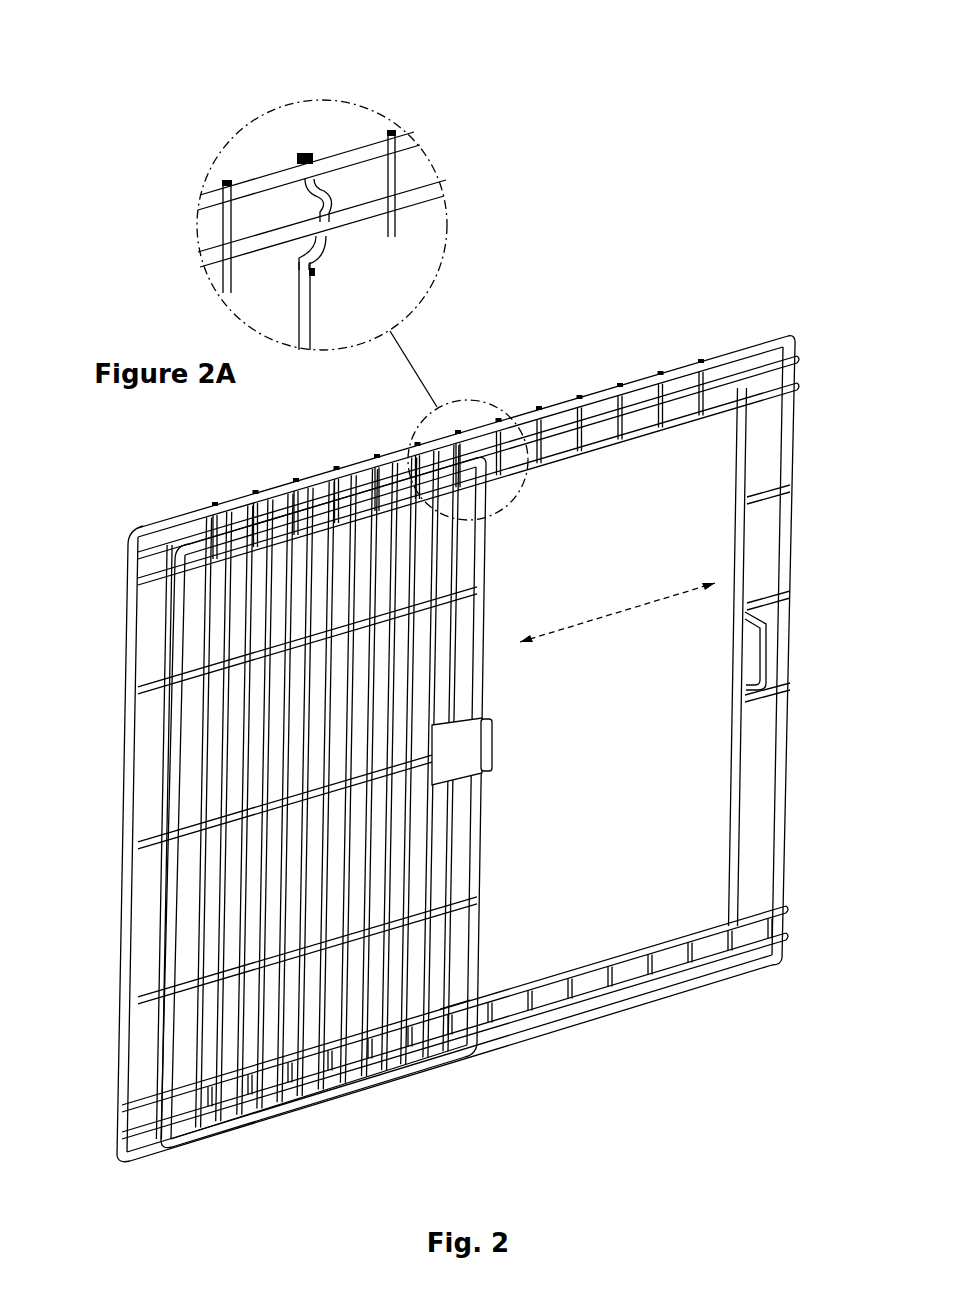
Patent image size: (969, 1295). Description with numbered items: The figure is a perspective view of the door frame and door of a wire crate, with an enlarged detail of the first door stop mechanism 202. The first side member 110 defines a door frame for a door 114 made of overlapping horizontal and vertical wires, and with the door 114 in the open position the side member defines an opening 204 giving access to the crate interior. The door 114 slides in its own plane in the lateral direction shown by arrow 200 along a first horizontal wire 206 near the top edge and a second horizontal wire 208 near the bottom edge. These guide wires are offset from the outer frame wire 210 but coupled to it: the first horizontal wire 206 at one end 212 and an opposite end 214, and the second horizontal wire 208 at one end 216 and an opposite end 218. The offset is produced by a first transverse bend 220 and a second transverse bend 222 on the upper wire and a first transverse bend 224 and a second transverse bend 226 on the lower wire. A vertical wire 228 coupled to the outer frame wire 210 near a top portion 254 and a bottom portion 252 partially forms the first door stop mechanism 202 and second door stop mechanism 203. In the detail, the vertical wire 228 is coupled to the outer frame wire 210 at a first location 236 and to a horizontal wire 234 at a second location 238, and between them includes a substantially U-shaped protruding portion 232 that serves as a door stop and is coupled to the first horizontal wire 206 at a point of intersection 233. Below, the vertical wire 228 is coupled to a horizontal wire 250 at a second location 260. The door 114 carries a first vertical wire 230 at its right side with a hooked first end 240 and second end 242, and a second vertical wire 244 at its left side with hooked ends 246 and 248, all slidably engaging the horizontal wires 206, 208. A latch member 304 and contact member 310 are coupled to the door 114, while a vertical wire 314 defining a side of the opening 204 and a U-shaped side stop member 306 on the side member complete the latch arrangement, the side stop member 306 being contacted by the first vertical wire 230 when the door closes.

In FIG. 2, the first side member 110 is at (447, 741).
In FIG. 2, the door 114 is at (310, 770).
In FIG. 2, the arrow 200 is at (640, 603).
In FIG. 2A, the first door stop mechanism 202 is at (308, 221).
In FIG. 2, the second door stop mechanism 203 is at (310, 770).
In FIG. 2, the opening 204 is at (447, 741).
In FIG. 2A, the first horizontal wire 206 is at (207, 257).
In FIG. 2, the first horizontal wire 206 is at (747, 380).
In FIG. 2, the second horizontal wire 208 is at (547, 1005).
In FIG. 2A, the outer frame wire 210 is at (268, 176).
In FIG. 2, the outer frame wire 210 is at (277, 489).
In FIG. 2, the one end 212 is at (115, 558).
In FIG. 2, the opposite end 214 is at (796, 337).
In FIG. 2, the one end 216 is at (116, 1136).
In FIG. 2, the opposite end 218 is at (790, 917).
In FIG. 2, the first transverse bend 220 is at (150, 587).
In FIG. 2, the second transverse bend 222 is at (798, 372).
In FIG. 2, the first transverse bend 224 is at (143, 1136).
In FIG. 2, the second transverse bend 226 is at (783, 950).
In FIG. 2A, the vertical wire 228 is at (370, 231).
In FIG. 2, the vertical wire 228 is at (457, 840).
In FIG. 2, the first vertical wire 230 is at (478, 560).
In FIG. 2A, the protruding portion 232 is at (337, 197).
In FIG. 2A, the point of intersection 233 is at (343, 232).
In FIG. 2A, the horizontal wire 234 is at (230, 293).
In FIG. 2, the horizontal wire 234 is at (458, 465).
In FIG. 2A, the first location 236 is at (292, 166).
In FIG. 2A, the second location 238 is at (321, 282).
In FIG. 2, the first end 240 is at (478, 442).
In FIG. 2, the second end 242 is at (475, 1050).
In FIG. 2, the second vertical wire 244 is at (173, 1012).
In FIG. 2, the first end 246 is at (176, 540).
In FIG. 2, the second end 248 is at (171, 1143).
In FIG. 2, the horizontal wire 250 is at (583, 957).
In FIG. 2, the bottom portion 252 is at (445, 1072).
In FIG. 2, the top portion 254 is at (456, 412).
In FIG. 2, the second location 260 is at (458, 989).
In FIG. 2, the latch member 304 is at (489, 757).
In FIG. 2, the side stop member 306 is at (760, 652).
In FIG. 2, the contact member 310 is at (450, 738).
In FIG. 2, the vertical wire 314 is at (737, 457).